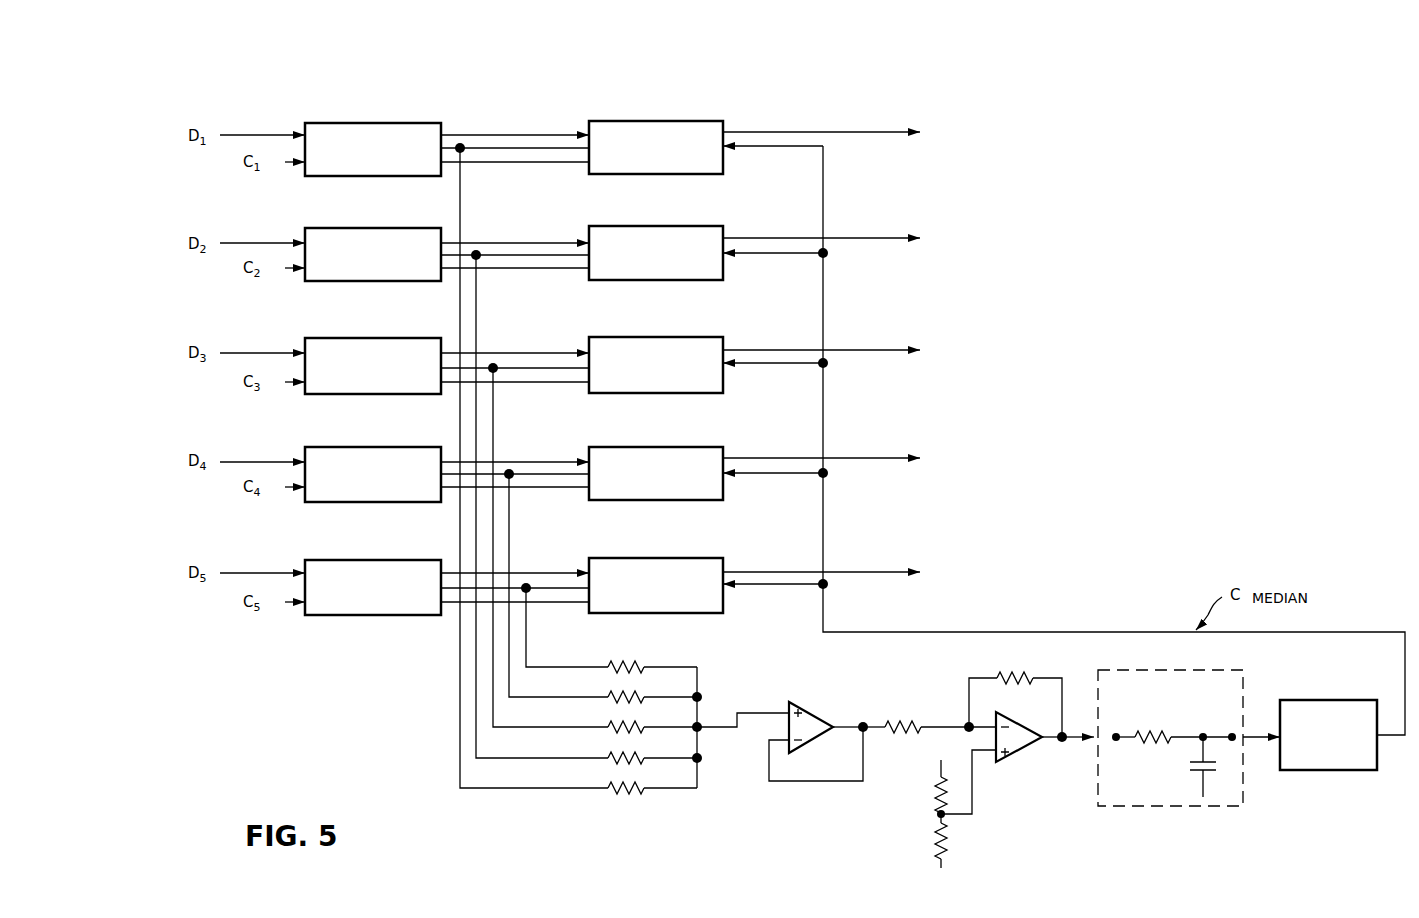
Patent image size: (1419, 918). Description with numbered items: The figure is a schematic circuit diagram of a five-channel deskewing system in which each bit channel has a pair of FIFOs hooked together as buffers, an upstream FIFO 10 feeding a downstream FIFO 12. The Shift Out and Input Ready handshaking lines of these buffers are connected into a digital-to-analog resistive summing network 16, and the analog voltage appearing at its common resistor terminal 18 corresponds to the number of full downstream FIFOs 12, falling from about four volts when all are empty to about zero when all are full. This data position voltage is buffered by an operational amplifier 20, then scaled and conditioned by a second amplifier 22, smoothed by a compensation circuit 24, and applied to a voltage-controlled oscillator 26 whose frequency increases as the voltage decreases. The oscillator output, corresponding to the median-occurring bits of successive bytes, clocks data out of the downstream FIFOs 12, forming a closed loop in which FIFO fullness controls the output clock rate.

The upstream FIFO 10 is at (373, 369).
The downstream FIFO 12 is at (754, 367).
The resistive summing network 16 is at (576, 505).
The common resistor terminal 18 is at (701, 730).
The operational amplifier 20 is at (833, 784).
The second amplifier 22 is at (1016, 765).
The compensation circuit 24 is at (1219, 806).
The voltage-controlled oscillator 26 is at (1343, 776).